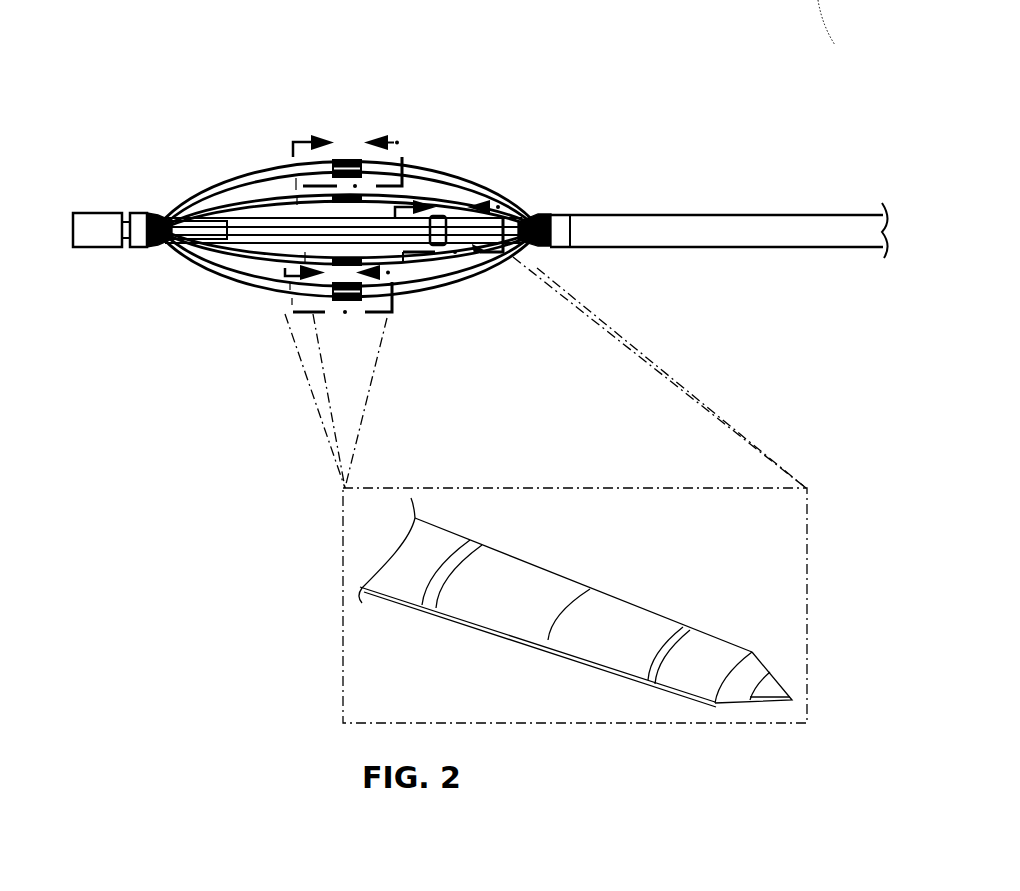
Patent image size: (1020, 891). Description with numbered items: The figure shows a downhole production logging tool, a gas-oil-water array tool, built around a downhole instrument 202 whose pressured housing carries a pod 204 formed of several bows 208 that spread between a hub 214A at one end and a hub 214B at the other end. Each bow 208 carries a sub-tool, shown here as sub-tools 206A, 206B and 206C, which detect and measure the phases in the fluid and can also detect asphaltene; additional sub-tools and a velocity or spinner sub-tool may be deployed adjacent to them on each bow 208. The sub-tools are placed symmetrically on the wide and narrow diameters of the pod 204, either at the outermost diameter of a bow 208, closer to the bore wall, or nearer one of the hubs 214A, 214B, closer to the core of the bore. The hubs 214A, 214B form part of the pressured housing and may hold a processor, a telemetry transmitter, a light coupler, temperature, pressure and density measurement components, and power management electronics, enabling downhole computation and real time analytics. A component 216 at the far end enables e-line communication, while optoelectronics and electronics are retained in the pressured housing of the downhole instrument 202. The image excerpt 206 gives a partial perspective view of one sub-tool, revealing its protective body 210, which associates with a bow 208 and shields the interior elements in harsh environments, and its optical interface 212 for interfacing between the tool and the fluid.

The downhole instrument 202 is at (668, 213).
The pod 204 is at (457, 165).
The image excerpt 206 is at (615, 561).
The sub-tool 206A is at (381, 132).
The sub-tool 206B is at (290, 302).
The sub-tool 206C is at (473, 203).
The bow 208 is at (257, 207).
The body 210 is at (651, 625).
The optical interface 212 is at (794, 694).
The hub 214A is at (142, 212).
The hub 214B is at (548, 214).
The component 216 is at (85, 212).